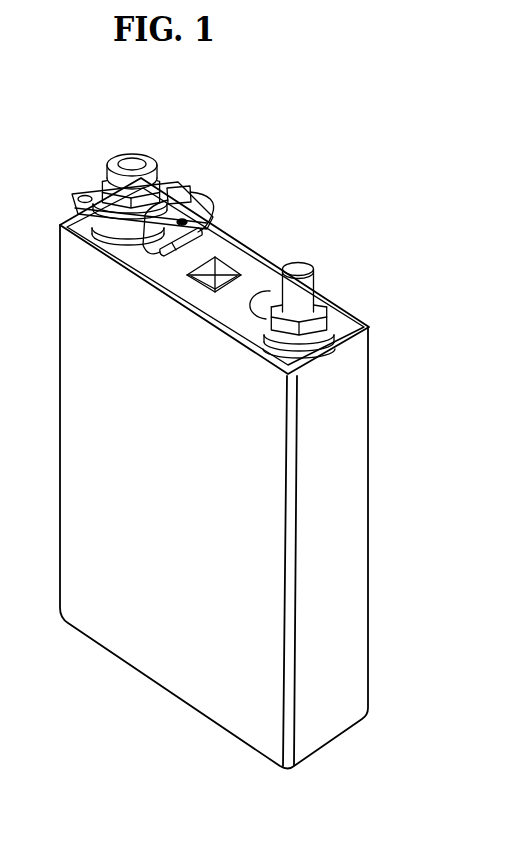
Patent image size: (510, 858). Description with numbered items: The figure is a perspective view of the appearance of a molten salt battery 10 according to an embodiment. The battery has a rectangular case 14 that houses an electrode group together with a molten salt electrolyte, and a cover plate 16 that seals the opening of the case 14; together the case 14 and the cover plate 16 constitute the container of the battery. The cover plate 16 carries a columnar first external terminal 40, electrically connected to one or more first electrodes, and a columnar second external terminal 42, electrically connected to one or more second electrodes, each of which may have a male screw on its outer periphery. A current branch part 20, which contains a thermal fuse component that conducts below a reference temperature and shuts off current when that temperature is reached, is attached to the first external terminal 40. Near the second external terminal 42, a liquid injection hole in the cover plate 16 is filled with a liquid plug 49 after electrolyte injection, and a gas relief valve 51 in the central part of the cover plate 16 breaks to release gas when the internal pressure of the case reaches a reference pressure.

The molten salt battery 10 is at (292, 247).
The case 14 is at (358, 632).
The cover plate 16 is at (237, 256).
The current branch part 20 is at (194, 176).
The first external terminal 40 is at (133, 158).
The second external terminal 42 is at (303, 268).
The liquid plug 49 is at (253, 308).
The gas relief valve 51 is at (199, 291).